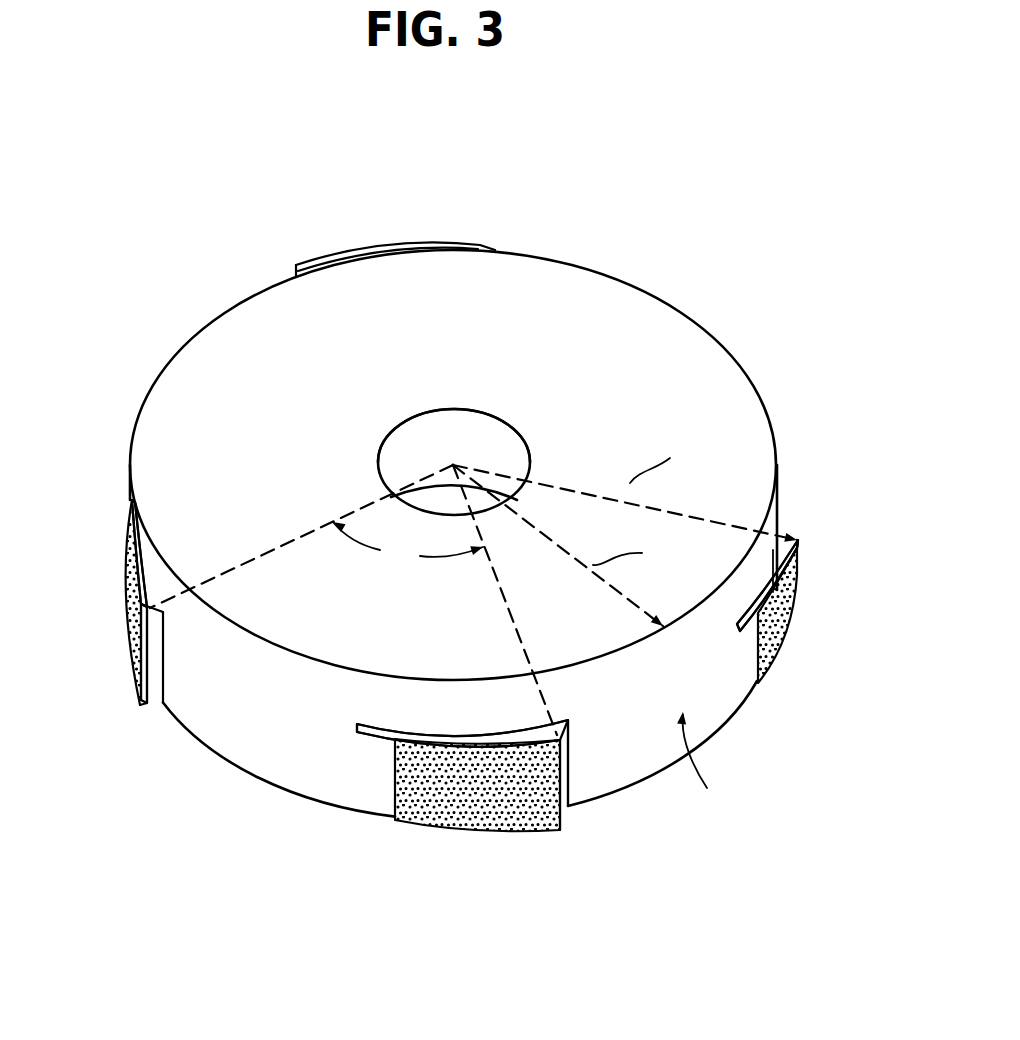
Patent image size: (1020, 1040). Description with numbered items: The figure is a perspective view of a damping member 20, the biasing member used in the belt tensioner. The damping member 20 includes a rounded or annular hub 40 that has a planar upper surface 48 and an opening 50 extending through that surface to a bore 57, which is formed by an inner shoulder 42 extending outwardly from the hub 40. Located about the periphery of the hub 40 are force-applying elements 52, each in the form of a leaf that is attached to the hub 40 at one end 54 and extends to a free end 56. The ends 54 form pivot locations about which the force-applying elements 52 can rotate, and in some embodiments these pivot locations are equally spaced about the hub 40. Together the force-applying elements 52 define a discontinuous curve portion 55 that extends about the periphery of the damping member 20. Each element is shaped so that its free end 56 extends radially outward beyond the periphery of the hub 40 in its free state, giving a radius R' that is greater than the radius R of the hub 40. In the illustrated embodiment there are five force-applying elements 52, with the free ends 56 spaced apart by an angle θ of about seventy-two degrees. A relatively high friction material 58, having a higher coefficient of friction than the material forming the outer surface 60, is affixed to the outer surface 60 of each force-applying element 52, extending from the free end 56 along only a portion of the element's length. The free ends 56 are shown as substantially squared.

The damping member 20 is at (735, 199).
The hub 40 is at (710, 375).
The inner shoulder 42 is at (497, 447).
The planar upper surface 48 is at (620, 313).
The opening 50 is at (478, 410).
The force-applying elements 52 is at (316, 263).
The end 54 is at (328, 796).
The discontinuous curve portion 55 is at (709, 762).
The free end 56 is at (150, 708).
The bore 57 is at (417, 462).
The high friction material 58 is at (130, 685).
The outer surface 60 is at (125, 592).